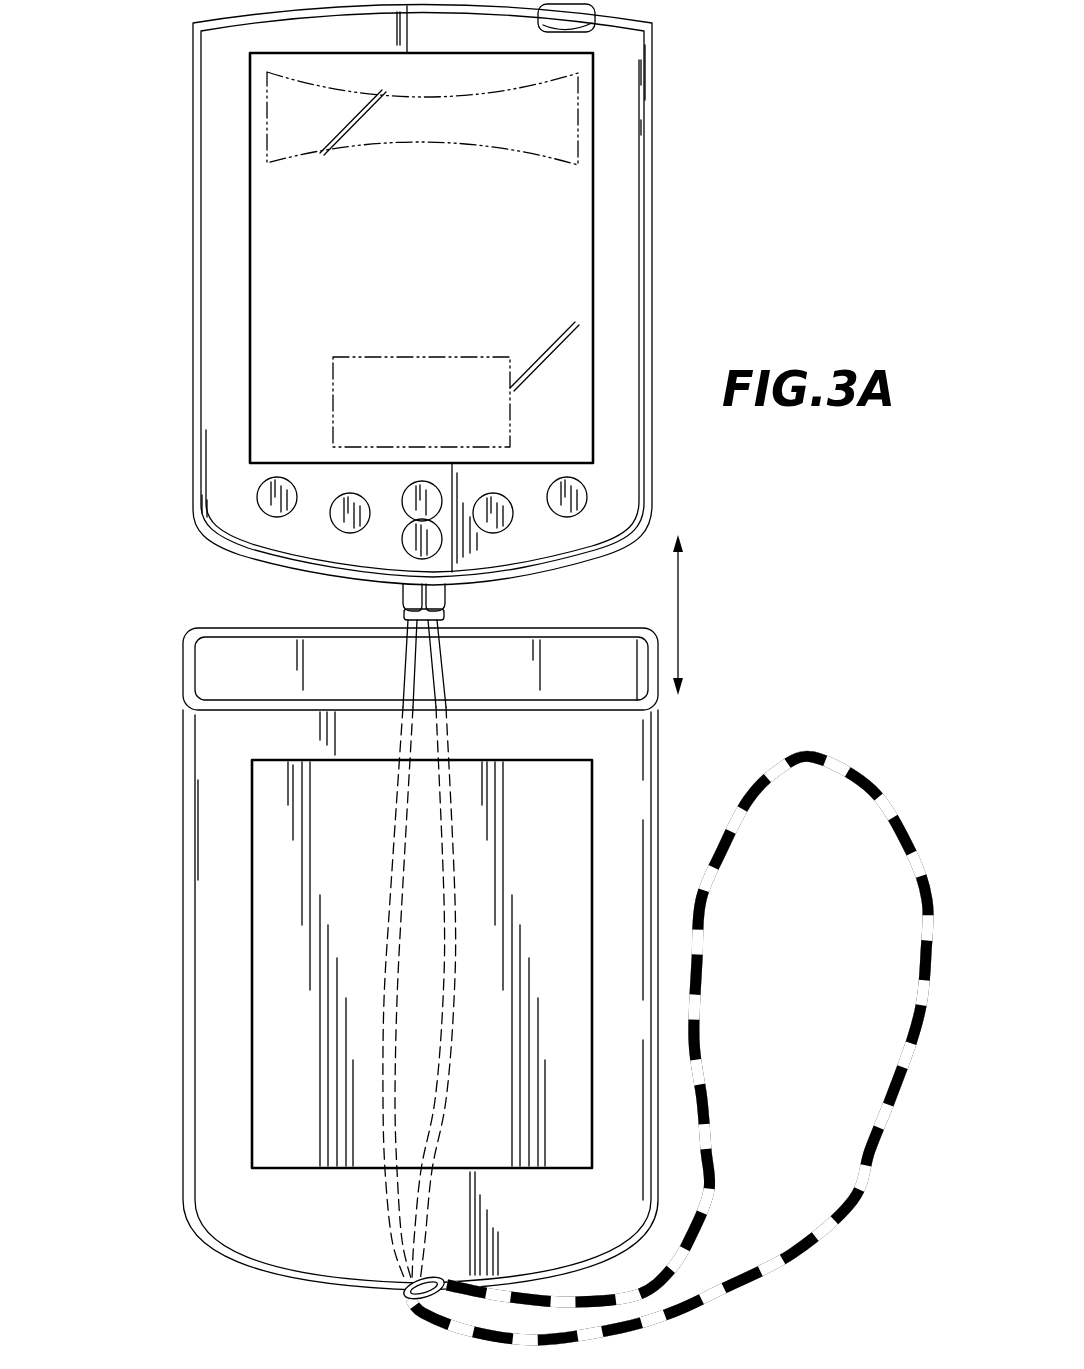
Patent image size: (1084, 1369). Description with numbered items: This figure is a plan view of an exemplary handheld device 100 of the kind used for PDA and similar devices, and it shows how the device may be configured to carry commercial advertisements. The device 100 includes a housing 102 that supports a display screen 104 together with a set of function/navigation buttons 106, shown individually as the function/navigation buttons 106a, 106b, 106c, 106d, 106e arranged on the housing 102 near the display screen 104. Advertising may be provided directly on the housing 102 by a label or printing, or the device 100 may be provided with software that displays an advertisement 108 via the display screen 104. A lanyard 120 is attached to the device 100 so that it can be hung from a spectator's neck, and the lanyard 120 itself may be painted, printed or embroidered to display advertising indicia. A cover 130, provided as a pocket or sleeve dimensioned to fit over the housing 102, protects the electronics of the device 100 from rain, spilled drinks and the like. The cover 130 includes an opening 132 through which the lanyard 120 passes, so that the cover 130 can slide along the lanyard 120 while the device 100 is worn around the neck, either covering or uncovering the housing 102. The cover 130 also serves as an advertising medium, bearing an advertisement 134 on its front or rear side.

The device 100 is at (700, 122).
The housing 102 is at (621, 219).
The display screen 104 is at (568, 275).
The function/navigation buttons 106 is at (262, 496).
The function/navigation button 106a is at (265, 502).
The function/navigation button 106b is at (345, 525).
The function/navigation button 106c is at (428, 538).
The function/navigation button 106d is at (505, 519).
The function/navigation button 106e is at (577, 493).
The advertisement 108 is at (493, 412).
The lanyard 120 is at (410, 675).
The cover 130 is at (213, 757).
The opening 132 is at (410, 1275).
The advertisement 134 is at (275, 910).